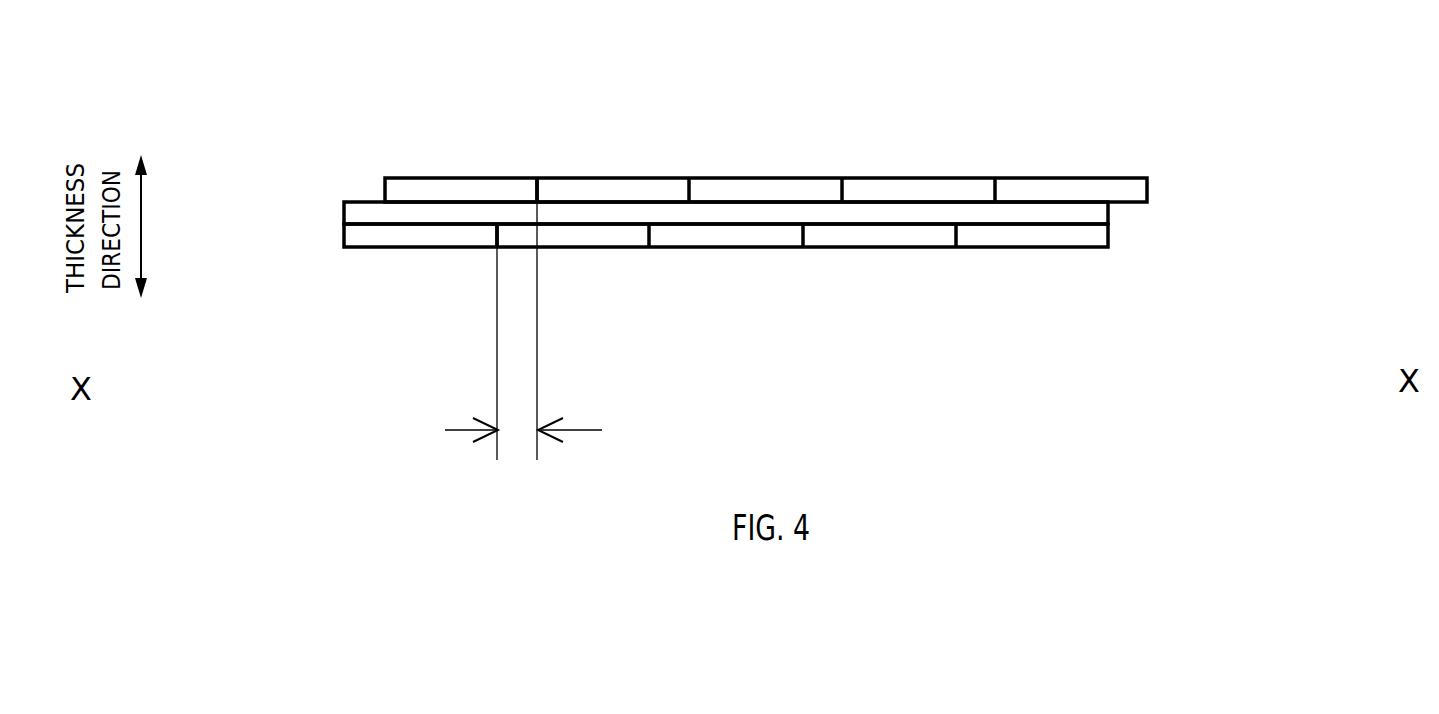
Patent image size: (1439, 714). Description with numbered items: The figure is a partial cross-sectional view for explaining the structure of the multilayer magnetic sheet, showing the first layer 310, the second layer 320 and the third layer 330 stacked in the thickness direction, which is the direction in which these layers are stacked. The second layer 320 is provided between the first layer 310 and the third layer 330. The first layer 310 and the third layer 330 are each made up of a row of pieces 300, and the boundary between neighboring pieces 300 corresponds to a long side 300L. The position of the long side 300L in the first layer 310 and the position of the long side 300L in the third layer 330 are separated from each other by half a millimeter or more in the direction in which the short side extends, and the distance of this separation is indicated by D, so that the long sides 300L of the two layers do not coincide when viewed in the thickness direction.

The magnetic piece 300 is at (453, 178).
The long side 300L is at (385, 179).
The first layer 310 is at (1131, 266).
The second layer 320 is at (1149, 213).
The third layer 330 is at (1183, 158).
The distance of separation D is at (523, 349).